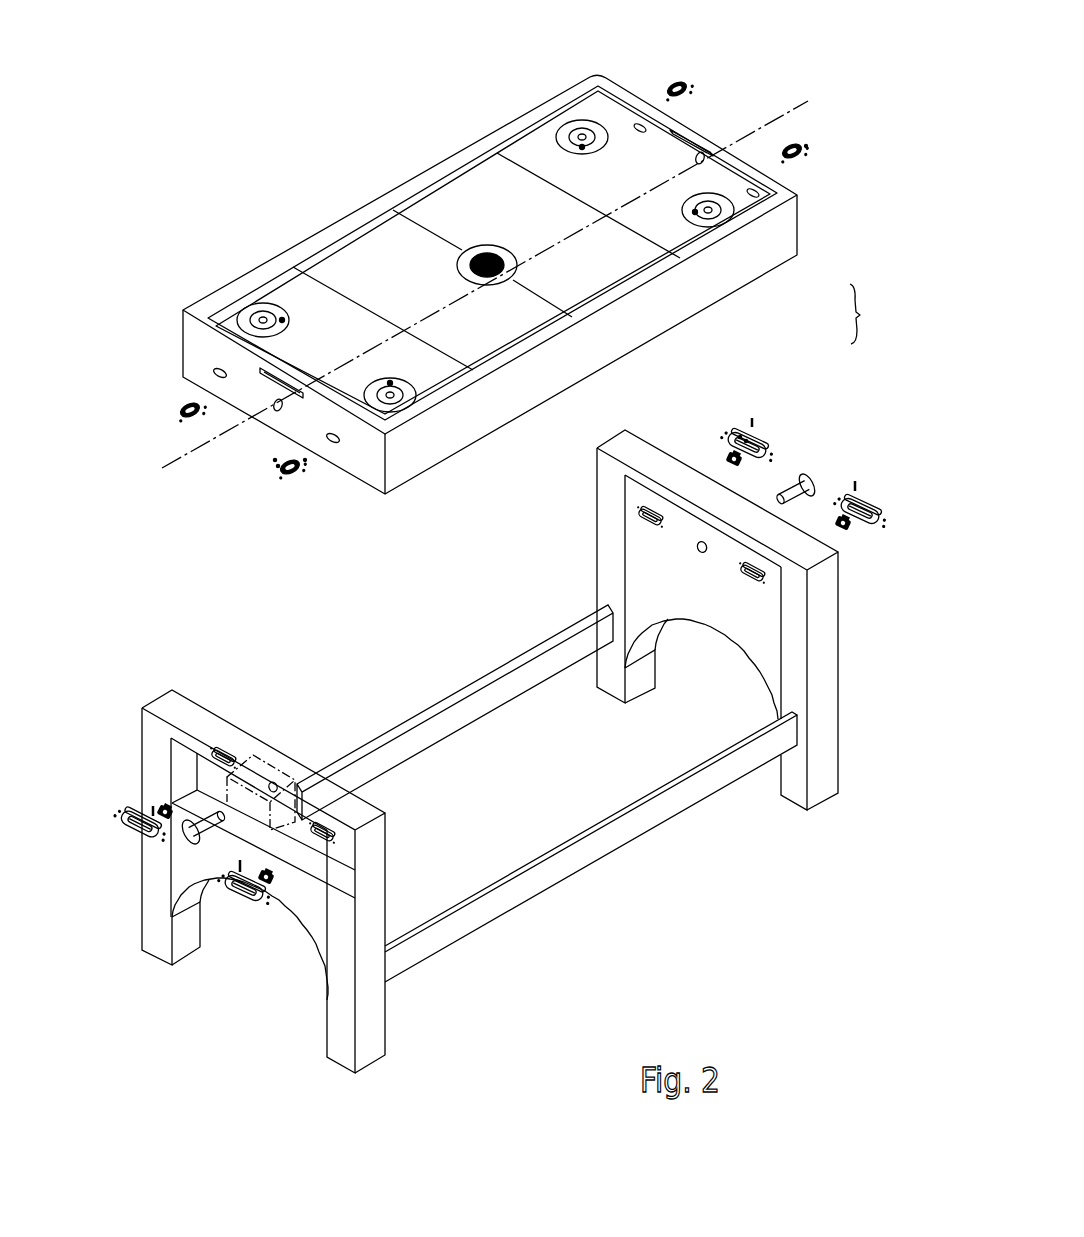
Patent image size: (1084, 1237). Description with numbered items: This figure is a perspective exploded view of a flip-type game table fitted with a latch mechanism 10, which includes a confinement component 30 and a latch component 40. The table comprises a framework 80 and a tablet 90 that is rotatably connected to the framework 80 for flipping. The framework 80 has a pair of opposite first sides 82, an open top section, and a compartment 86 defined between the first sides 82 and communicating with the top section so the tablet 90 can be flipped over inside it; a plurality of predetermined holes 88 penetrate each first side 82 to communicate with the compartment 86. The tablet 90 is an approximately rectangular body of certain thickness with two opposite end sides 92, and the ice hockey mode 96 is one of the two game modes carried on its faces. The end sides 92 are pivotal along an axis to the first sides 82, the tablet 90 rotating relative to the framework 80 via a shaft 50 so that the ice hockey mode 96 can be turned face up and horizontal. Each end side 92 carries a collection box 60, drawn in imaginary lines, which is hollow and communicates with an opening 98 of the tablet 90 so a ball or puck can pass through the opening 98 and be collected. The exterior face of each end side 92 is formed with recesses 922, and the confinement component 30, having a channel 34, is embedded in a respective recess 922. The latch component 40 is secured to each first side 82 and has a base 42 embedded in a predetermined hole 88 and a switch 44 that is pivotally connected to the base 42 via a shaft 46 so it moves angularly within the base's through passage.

The latch mechanism 10 is at (888, 322).
The confinement component 30 is at (801, 167).
The channel 34 is at (284, 474).
The latch component 40 is at (862, 463).
The base 42 is at (734, 440).
The switch 44 is at (725, 457).
The shaft 46 is at (752, 416).
The shaft 50 is at (793, 482).
The collection box 60 is at (283, 820).
The framework 80 is at (510, 752).
The first side 82 is at (605, 440).
The compartment 86 is at (348, 690).
The predetermined hole 88 is at (646, 524).
The tablet 90 is at (500, 292).
The end side 92 is at (607, 72).
The recess 922 is at (212, 373).
The ice hockey mode 96 is at (530, 150).
The opening 98 is at (690, 148).